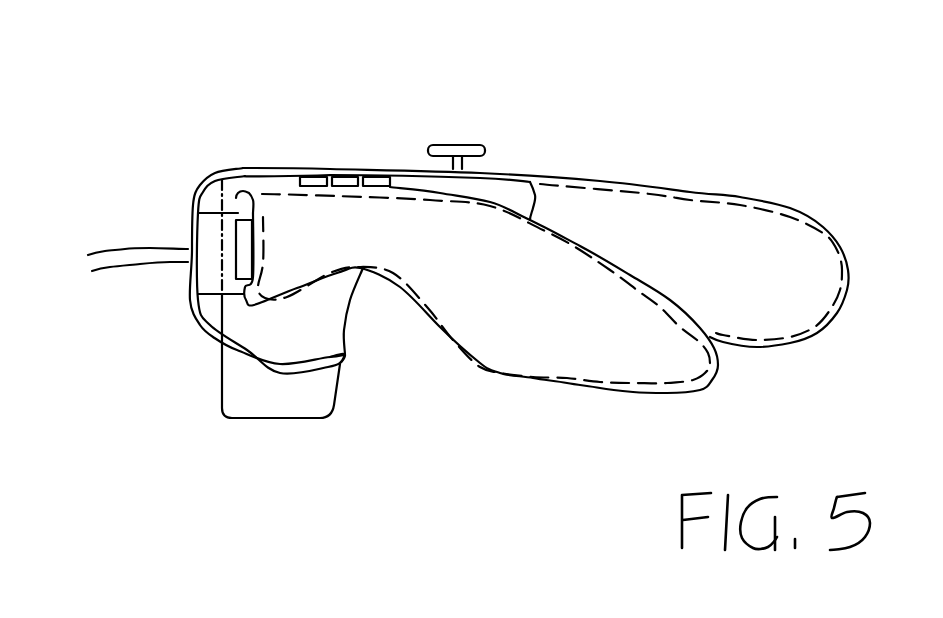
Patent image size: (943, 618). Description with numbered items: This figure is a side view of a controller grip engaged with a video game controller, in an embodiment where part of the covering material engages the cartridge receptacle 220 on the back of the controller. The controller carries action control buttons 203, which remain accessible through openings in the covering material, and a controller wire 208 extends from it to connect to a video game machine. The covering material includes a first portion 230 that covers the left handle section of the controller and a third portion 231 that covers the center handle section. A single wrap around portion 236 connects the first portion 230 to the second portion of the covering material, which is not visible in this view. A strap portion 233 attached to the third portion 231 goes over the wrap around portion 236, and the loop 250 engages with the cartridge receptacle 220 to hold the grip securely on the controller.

The action control buttons 203 is at (248, 243).
The controller wire 208 is at (138, 250).
The cartridge receptacle 220 is at (247, 393).
The first portion of the covering material 230 is at (572, 337).
The third portion of the covering material 231 is at (687, 235).
The strap portion 233 is at (201, 212).
The wrap around portion 236 is at (213, 228).
The loop 250 is at (347, 357).